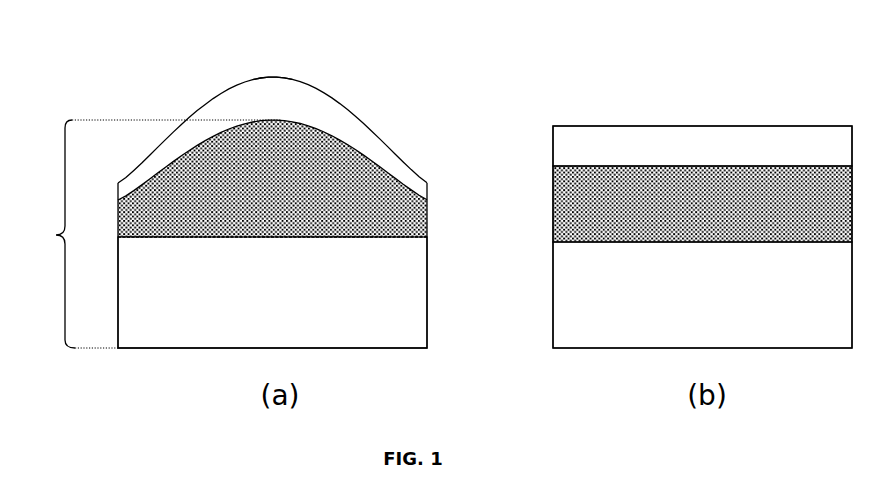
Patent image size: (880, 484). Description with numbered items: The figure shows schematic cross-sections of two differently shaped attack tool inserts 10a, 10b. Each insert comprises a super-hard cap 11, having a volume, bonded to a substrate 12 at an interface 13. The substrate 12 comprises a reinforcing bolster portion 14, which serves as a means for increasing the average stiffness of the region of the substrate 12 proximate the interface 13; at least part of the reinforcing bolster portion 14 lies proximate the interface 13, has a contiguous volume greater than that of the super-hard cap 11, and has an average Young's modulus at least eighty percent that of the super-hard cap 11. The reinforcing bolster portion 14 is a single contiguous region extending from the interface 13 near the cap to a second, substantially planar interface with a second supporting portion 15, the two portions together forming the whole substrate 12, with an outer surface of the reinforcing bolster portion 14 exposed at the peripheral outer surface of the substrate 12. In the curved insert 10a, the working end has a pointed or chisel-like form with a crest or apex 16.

The attack tool insert 10a is at (325, 64).
The attack tool insert 10b is at (723, 73).
The super-hard cap 11 is at (272, 147).
The substrate 12 is at (150, 234).
The interface 13 is at (381, 165).
The reinforcing bolster portion 14 is at (272, 178).
The second supporting portion 15 is at (272, 292).
The apex 16 is at (272, 74).